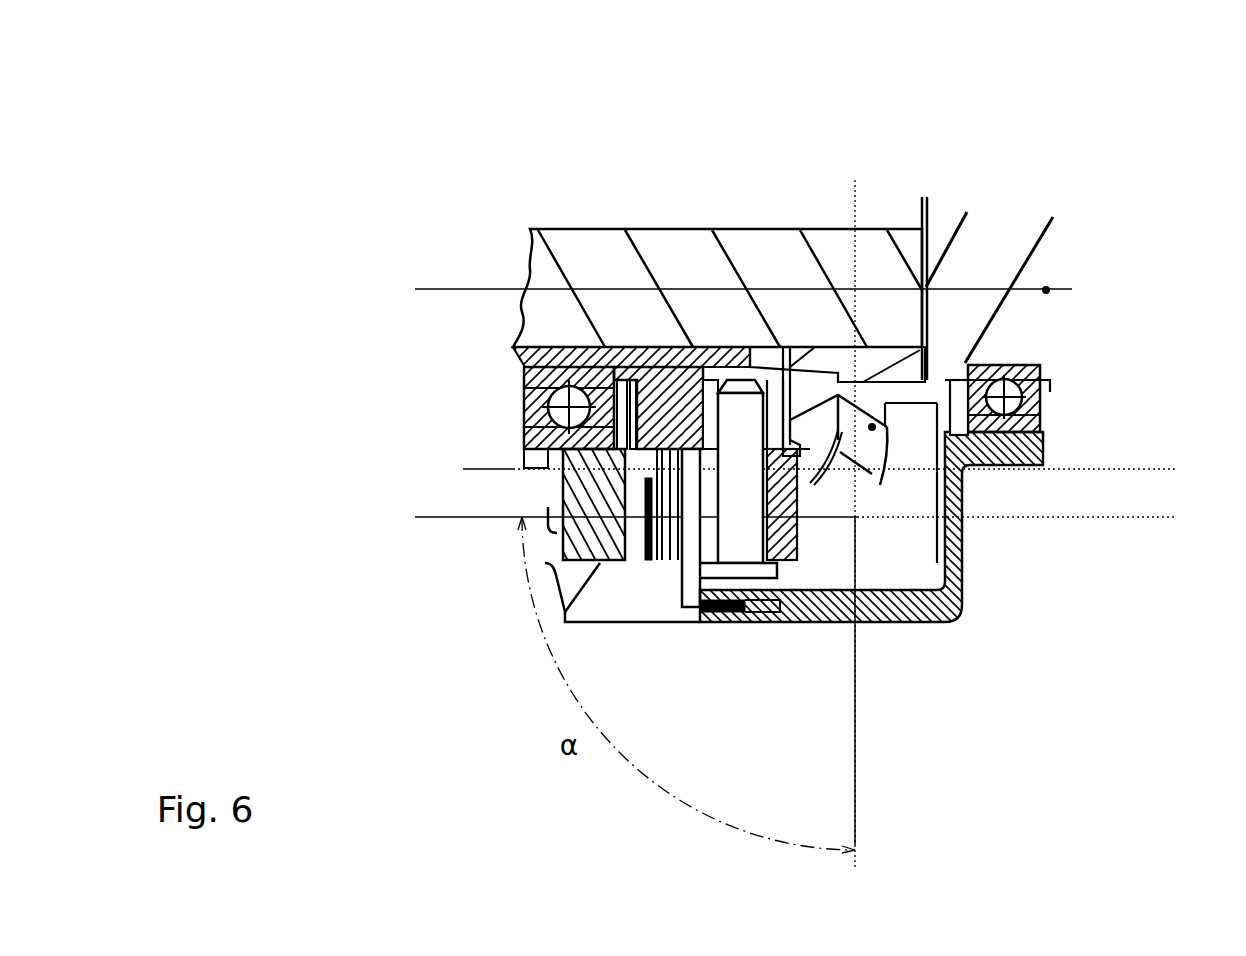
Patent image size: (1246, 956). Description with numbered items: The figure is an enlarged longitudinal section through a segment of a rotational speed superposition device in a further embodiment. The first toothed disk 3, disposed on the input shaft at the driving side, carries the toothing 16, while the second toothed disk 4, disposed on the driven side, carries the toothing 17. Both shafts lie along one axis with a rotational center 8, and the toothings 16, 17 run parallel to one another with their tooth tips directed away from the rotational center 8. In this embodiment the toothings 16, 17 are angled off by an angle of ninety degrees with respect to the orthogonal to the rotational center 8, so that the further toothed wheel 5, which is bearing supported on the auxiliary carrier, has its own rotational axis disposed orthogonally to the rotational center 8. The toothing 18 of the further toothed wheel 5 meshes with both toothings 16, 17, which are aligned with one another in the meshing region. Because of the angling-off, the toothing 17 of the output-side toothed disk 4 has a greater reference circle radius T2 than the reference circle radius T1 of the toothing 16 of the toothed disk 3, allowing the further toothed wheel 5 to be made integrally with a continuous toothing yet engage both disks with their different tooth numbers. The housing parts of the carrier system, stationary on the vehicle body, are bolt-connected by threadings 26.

The first toothed disk 3 is at (810, 390).
The second toothed disk 4 is at (872, 427).
The further toothed wheel 5 is at (782, 508).
The rotational center 8 is at (1052, 282).
The toothing 16 is at (797, 458).
The toothing 17 is at (797, 525).
The toothing 18 is at (682, 517).
The threadings 26 is at (723, 612).
The reference circle radius T1 is at (494, 289).
The reference circle radius T2 is at (428, 517).